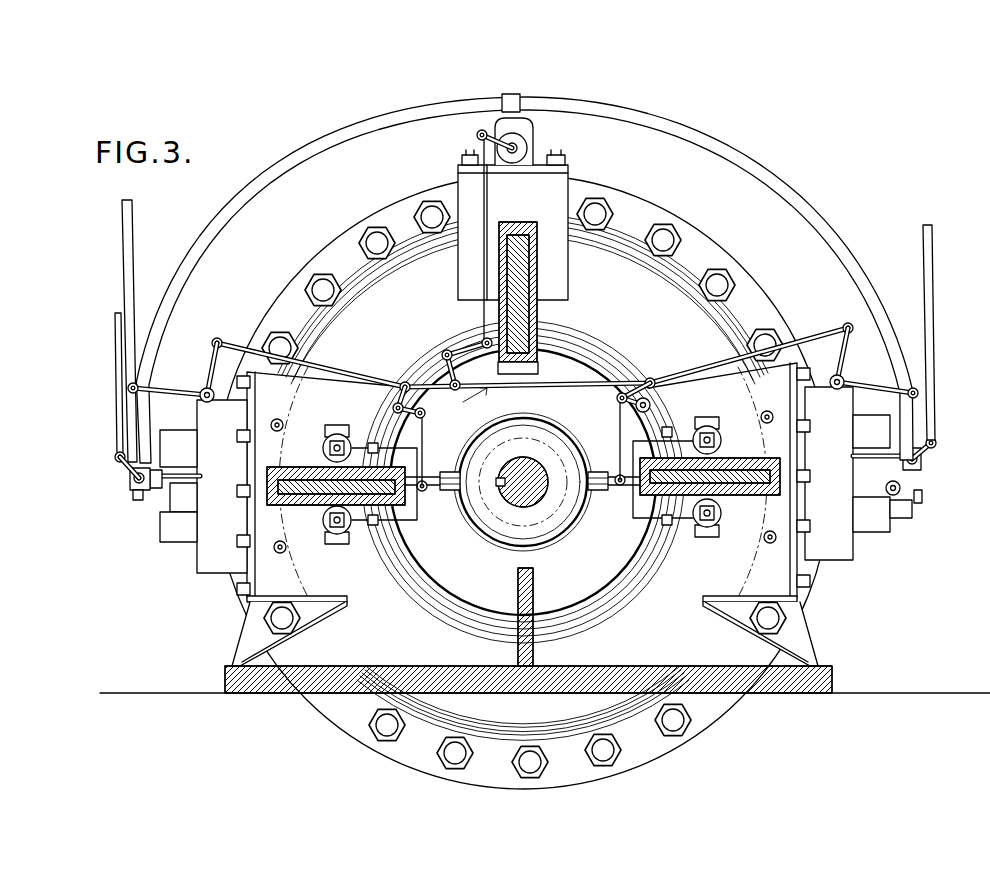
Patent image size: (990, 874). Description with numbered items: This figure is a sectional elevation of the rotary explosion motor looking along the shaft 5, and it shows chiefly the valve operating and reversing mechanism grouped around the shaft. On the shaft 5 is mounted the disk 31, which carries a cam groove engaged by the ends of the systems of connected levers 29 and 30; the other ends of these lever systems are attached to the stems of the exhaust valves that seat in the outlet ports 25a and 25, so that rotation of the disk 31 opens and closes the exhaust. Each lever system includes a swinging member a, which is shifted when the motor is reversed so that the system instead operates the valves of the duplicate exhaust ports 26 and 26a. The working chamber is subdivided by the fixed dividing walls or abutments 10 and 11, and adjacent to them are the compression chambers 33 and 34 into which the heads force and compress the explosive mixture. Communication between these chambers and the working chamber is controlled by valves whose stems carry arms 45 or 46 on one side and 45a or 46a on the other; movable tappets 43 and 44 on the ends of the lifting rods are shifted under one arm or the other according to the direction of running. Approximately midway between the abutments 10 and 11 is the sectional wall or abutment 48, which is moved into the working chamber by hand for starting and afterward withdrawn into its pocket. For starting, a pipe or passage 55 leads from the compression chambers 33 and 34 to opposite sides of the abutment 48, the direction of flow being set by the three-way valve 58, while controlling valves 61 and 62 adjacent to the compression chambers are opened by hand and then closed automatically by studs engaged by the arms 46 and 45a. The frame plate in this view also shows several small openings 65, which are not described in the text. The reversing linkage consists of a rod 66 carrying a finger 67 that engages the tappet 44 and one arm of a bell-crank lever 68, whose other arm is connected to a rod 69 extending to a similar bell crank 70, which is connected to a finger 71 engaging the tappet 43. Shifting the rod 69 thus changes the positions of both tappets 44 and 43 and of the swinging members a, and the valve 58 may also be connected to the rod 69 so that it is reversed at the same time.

The shaft 5 is at (540, 468).
The dividing wall or abutment 10 is at (745, 464).
The dividing wall or abutment 11 is at (318, 505).
The outlet port 25 is at (712, 436).
The outlet port 25a is at (348, 528).
The exhaust port 26 is at (720, 517).
The exhaust port 26a is at (330, 440).
The connected lever 29 is at (612, 478).
The connected lever 30 is at (432, 480).
The disk 31 is at (556, 522).
The compression chamber 33 is at (830, 527).
The compression chamber 34 is at (222, 580).
The movable tappet 43 is at (898, 492).
The movable tappet 44 is at (160, 496).
The arm 45 is at (897, 433).
The arm 45a is at (182, 542).
The arm 46 is at (905, 520).
The arm 46a is at (168, 432).
The sectional wall or abutment 48 is at (540, 325).
The pipe or passage 55 is at (238, 222).
The three-way valve 58 is at (532, 152).
The controlling valve 61 is at (920, 460).
The controlling valve 62 is at (130, 482).
The frame bolt holes 65 is at (277, 419).
The rod 66 is at (122, 272).
The finger 67 is at (158, 481).
The bell-crank lever 68 is at (190, 390).
The rod 69 is at (630, 381).
The bell crank 70 is at (868, 382).
The finger 71 is at (923, 497).
The swinging member a is at (442, 490).